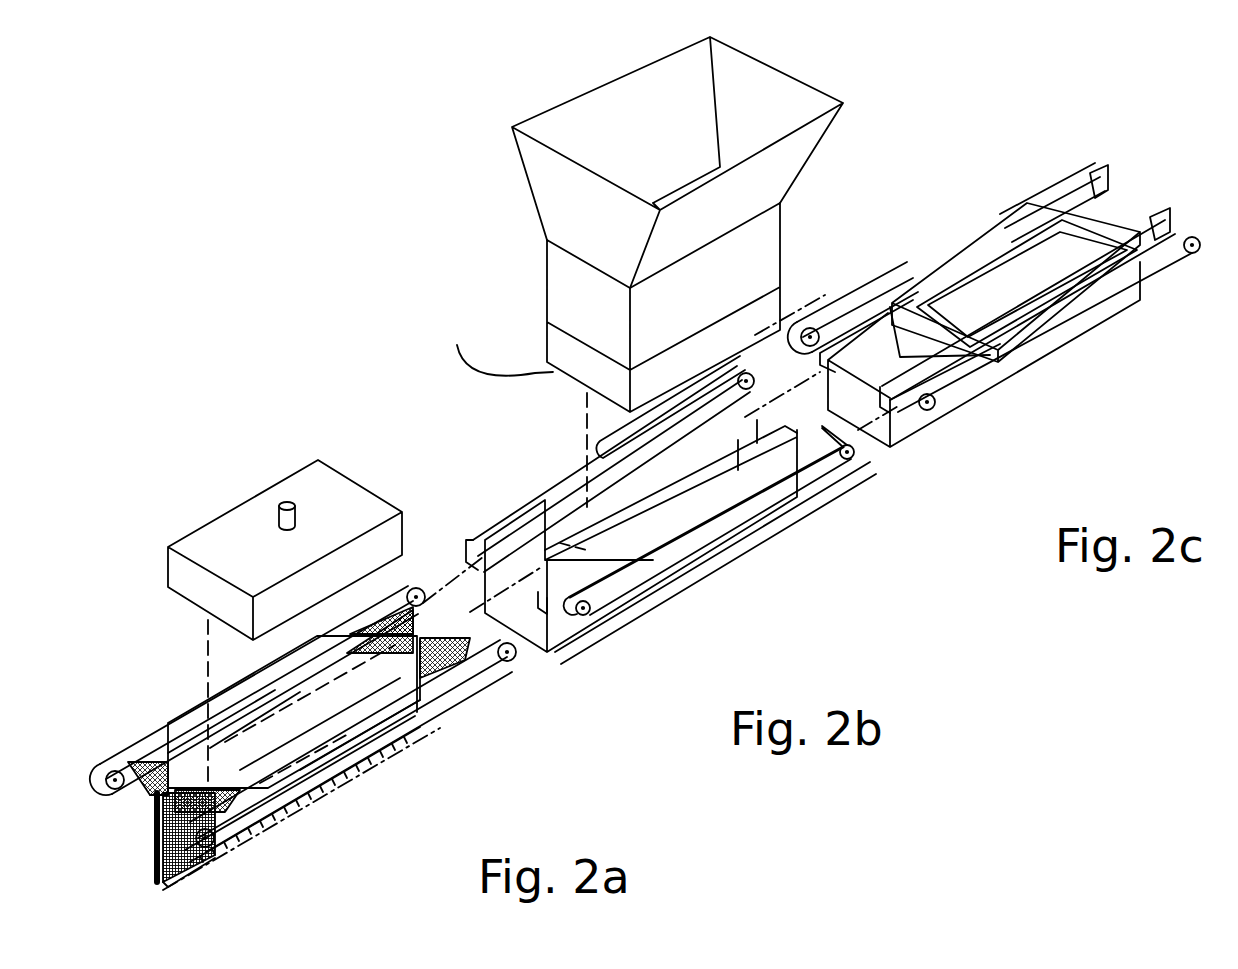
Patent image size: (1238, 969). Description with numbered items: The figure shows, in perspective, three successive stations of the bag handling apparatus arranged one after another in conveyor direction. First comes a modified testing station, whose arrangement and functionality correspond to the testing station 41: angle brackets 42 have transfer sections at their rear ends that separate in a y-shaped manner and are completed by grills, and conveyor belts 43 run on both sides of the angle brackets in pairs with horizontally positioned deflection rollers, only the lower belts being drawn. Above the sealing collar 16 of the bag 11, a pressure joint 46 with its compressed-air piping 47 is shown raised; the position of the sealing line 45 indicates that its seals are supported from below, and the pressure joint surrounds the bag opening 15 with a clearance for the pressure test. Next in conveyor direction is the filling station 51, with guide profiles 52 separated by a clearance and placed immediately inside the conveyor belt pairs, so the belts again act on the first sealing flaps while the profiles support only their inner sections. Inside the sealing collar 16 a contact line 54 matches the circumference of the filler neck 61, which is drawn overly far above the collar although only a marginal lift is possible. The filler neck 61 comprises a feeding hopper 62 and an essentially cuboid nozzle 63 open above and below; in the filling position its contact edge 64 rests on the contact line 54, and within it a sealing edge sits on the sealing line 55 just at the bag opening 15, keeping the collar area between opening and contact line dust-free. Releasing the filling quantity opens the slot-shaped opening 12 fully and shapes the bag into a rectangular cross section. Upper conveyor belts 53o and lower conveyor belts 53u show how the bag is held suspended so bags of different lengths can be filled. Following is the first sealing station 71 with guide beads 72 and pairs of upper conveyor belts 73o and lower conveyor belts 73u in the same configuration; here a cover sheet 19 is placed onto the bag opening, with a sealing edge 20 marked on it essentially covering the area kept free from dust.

In FIG. 2a, the bag 11 is at (426, 840).
In FIG. 2b, the bag 11 is at (780, 532).
In FIG. 2c, the bag 11 is at (1110, 354).
In FIG. 2a, the slot-shaped opening 12 is at (343, 753).
In FIG. 2b, the bag opening 15 is at (658, 481).
In FIG. 2c, the sealing collar 16 is at (947, 253).
In FIG. 2c, the cover sheet 19 is at (978, 293).
In FIG. 2c, the sealing edge 20 is at (1020, 237).
In FIG. 2a, the testing station 41 is at (374, 884).
In FIG. 2a, the angle brackets 42 is at (105, 762).
In FIG. 2a, the conveyor belts 43 is at (150, 742).
In FIG. 2a, the sealing line 45 is at (397, 733).
In FIG. 2a, the pressure joint 46 is at (245, 553).
In FIG. 2a, the press pin 47 is at (285, 503).
In FIG. 2b, the filling station 51 is at (641, 547).
In FIG. 2b, the guide profiles 52 is at (482, 545).
In FIG. 2b, the upper conveyor belts 53o is at (690, 397).
In FIG. 2b, the lower conveyor belts 53u is at (527, 512).
In FIG. 2b, the contact line 54 is at (773, 517).
In FIG. 2b, the sealing line 55 is at (690, 503).
In FIG. 2b, the filler neck 61 is at (630, 272).
In FIG. 2b, the feeding hopper 62 is at (547, 167).
In FIG. 2b, the nozzle 63 is at (558, 343).
In FIG. 2b, the contact edge 64 is at (496, 343).
In FIG. 2c, the first sealing station 71 is at (984, 354).
In FIG. 2c, the guide beads 72 is at (1105, 183).
In FIG. 2c, the upper conveyor belts 73o is at (865, 287).
In FIG. 2c, the lower conveyor belts 73u is at (1067, 187).